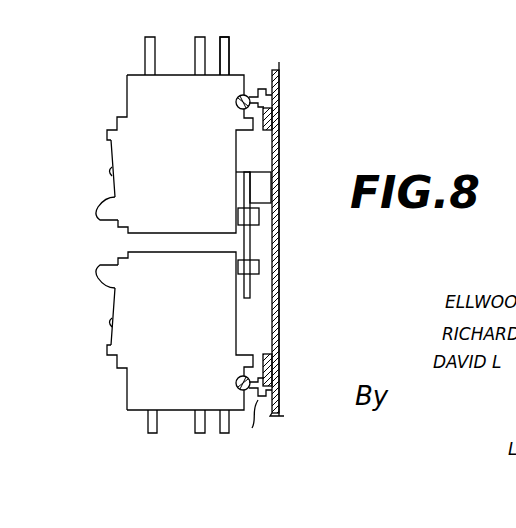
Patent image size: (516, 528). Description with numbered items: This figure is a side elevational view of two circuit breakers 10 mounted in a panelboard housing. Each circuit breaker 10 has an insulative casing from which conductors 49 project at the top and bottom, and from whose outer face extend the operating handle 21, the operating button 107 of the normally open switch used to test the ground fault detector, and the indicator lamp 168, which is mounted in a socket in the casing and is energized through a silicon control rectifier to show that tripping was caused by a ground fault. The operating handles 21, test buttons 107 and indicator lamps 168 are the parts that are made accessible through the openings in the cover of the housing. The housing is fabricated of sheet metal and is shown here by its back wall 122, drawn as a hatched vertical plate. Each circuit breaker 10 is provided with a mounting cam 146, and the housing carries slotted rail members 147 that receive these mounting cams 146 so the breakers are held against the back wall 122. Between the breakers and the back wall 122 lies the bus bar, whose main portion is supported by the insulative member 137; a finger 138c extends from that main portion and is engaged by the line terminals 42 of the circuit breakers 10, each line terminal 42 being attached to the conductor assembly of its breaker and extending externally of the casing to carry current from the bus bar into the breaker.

The circuit breaker 10 is at (121, 88).
The operating button 107 is at (108, 134).
The indicator lamp 168 is at (108, 172).
The operating handle 21 is at (97, 214).
The conductor 49 is at (229, 56).
The mounting cam 146 is at (280, 86).
The slotted rail member 147 is at (271, 118).
The back wall 122 is at (282, 152).
The insulative member 137 is at (268, 199).
The finger 138c is at (255, 249).
The line terminal 42 is at (240, 215).